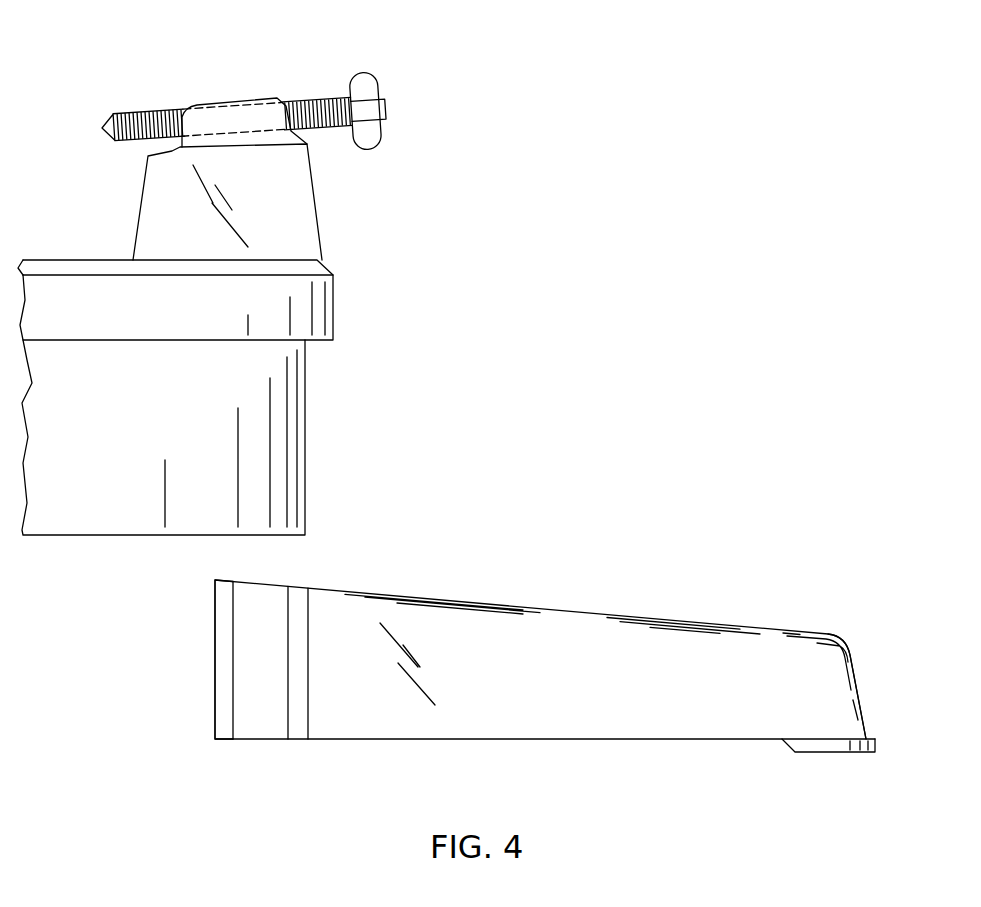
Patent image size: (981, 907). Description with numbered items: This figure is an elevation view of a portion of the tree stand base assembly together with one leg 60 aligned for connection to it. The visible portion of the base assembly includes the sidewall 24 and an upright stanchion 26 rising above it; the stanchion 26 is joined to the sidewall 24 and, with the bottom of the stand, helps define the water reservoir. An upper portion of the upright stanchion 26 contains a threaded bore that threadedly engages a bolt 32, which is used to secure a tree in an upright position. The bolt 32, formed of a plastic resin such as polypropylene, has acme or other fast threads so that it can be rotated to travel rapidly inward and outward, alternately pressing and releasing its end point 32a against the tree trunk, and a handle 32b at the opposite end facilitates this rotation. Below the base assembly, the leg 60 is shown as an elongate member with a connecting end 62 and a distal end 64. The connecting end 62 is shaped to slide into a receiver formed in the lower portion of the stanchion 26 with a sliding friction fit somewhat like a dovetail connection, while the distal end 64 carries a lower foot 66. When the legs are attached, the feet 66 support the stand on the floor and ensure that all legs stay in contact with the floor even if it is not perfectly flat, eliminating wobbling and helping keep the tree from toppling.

The sidewall 24 is at (305, 365).
The upright stanchion 26 is at (315, 210).
The bolt 32 is at (249, 120).
The bolt end point 32a is at (103, 130).
The handle 32b is at (370, 138).
The leg 60 is at (697, 658).
The connecting end 62 is at (270, 722).
The distal end 64 is at (860, 690).
The lower foot 66 is at (827, 750).